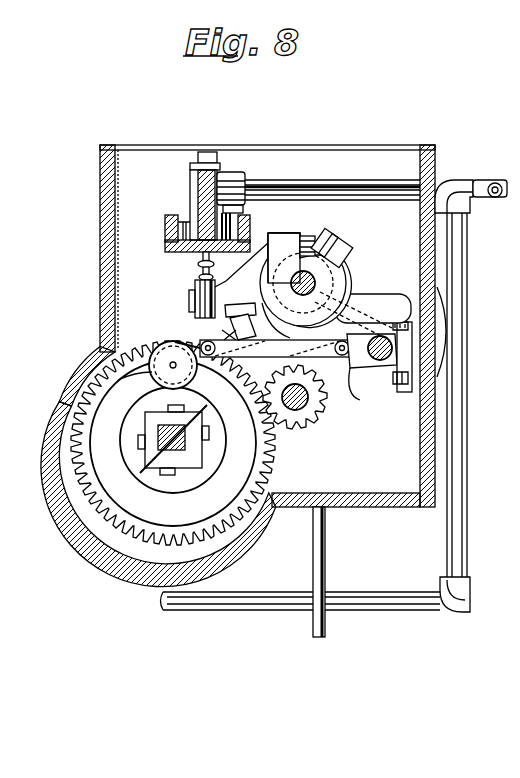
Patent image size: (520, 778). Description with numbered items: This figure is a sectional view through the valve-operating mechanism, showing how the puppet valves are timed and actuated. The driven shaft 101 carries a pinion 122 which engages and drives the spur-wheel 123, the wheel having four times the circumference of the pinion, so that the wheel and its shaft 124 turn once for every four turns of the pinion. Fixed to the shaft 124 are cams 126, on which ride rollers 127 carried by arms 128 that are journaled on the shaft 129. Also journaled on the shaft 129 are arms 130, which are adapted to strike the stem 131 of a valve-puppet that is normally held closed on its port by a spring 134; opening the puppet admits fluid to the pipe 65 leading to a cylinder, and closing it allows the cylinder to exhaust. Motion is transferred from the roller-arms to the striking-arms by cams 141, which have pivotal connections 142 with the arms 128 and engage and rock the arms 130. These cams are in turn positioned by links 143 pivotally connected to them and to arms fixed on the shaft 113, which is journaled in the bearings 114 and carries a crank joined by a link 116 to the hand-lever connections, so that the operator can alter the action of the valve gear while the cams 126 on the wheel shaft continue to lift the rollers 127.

The pipe 65 is at (362, 183).
The shaft 101 is at (304, 426).
The shaft 113 is at (408, 350).
The bearings 114 is at (398, 384).
The link 116 is at (327, 556).
The pinion 122 is at (315, 408).
The spur-wheel 123 is at (110, 485).
The shaft 124 is at (165, 475).
The cams 126 is at (118, 545).
The rollers 127 is at (103, 351).
The arms 128 is at (192, 328).
The shaft 129 is at (356, 283).
The arms 130 is at (195, 300).
The stem 131 is at (200, 271).
The spring 134 is at (200, 253).
The cams 141 is at (226, 335).
The pivotal connections 142 is at (230, 320).
The links 143 is at (372, 362).